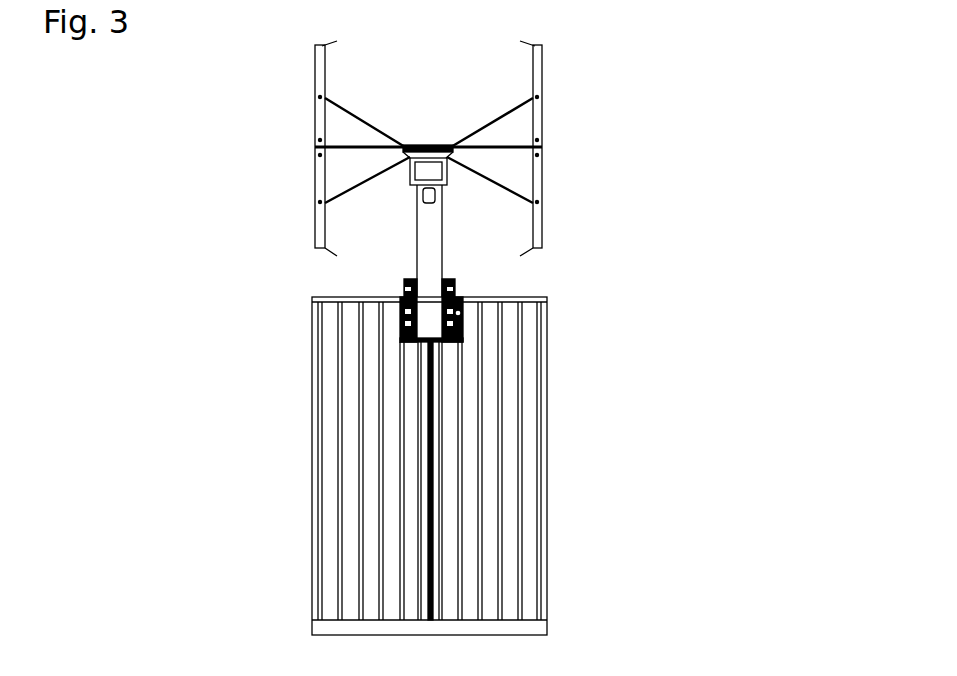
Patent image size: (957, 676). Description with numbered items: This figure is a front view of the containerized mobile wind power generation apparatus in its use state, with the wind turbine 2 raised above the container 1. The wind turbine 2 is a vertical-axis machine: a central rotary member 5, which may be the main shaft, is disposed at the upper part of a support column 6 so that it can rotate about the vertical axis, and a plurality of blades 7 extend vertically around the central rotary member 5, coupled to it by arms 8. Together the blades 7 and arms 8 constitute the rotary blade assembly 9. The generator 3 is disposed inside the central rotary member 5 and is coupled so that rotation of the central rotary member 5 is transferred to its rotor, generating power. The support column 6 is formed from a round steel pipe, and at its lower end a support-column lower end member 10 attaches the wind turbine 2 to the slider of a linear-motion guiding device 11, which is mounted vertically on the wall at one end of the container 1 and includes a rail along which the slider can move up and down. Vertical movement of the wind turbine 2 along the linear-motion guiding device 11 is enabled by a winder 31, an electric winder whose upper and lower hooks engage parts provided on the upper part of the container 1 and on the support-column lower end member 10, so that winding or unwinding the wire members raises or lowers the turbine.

The container 1 is at (527, 296).
The wind turbine 2 is at (547, 78).
The generator 3 is at (427, 166).
The central rotary member 5 is at (445, 176).
The support column 6 is at (425, 253).
The blades 7 is at (317, 80).
The arms 8 is at (317, 130).
The rotary blade assembly 9 is at (165, 75).
The support-column lower end member 10 is at (402, 335).
The linear-motion guiding device 11 is at (433, 422).
The winder 31 is at (461, 312).